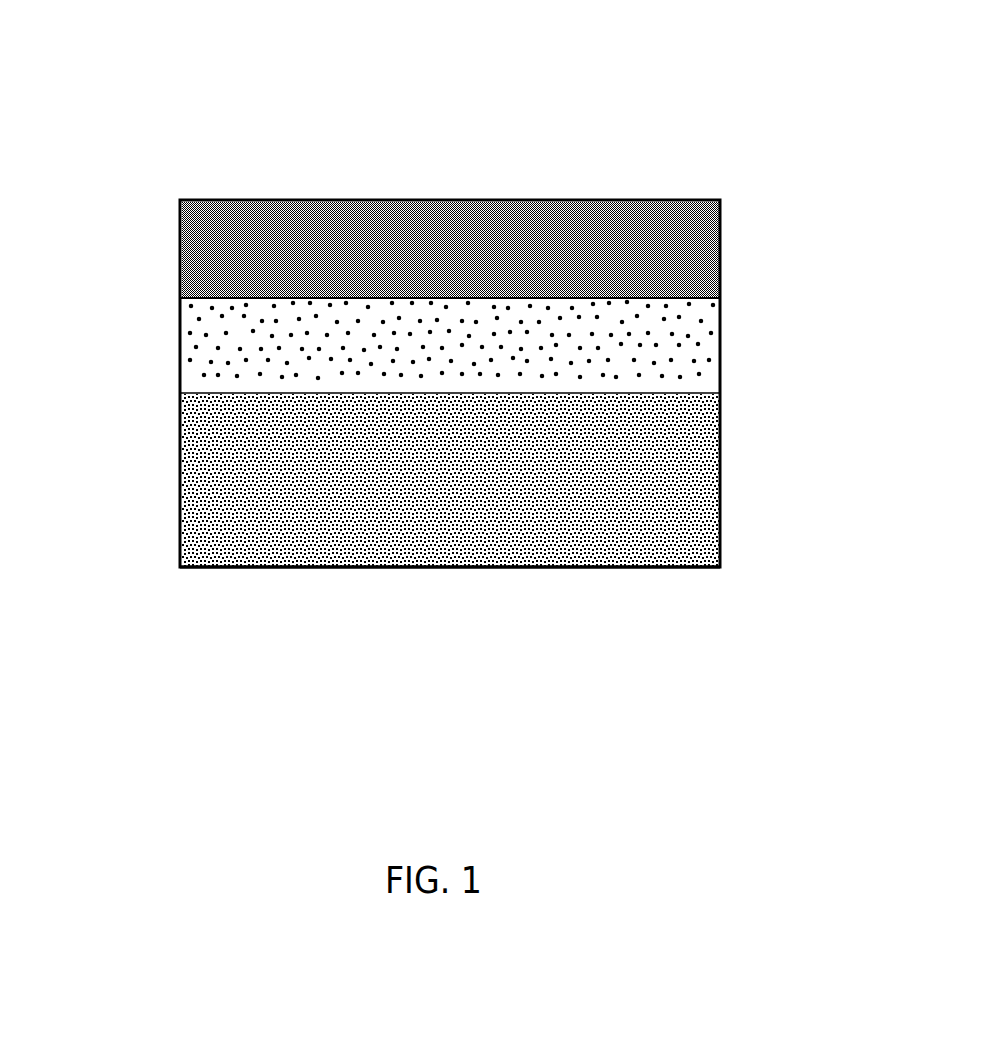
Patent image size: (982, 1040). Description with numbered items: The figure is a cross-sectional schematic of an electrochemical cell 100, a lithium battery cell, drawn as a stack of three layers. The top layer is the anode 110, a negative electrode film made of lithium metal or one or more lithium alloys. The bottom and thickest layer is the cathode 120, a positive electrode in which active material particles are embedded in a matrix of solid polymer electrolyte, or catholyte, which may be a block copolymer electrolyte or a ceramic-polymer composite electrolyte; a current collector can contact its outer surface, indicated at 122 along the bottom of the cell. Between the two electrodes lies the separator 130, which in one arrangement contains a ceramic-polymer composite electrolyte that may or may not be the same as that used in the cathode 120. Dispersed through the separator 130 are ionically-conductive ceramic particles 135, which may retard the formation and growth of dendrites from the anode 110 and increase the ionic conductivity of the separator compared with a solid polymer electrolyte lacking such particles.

The electrochemical cell 100 is at (188, 147).
The anode 110 is at (612, 250).
The cathode 120 is at (682, 502).
The bottom surface of substrate 122 is at (307, 588).
The separator 130 is at (225, 330).
The ionically-conductive ceramic particles 135 is at (218, 355).